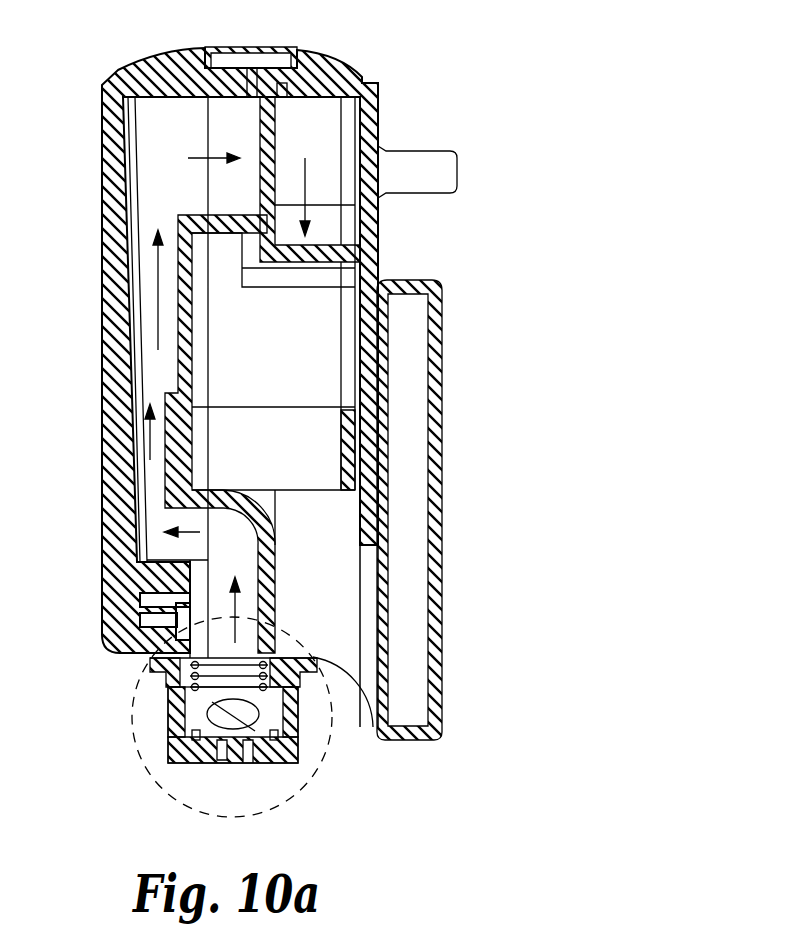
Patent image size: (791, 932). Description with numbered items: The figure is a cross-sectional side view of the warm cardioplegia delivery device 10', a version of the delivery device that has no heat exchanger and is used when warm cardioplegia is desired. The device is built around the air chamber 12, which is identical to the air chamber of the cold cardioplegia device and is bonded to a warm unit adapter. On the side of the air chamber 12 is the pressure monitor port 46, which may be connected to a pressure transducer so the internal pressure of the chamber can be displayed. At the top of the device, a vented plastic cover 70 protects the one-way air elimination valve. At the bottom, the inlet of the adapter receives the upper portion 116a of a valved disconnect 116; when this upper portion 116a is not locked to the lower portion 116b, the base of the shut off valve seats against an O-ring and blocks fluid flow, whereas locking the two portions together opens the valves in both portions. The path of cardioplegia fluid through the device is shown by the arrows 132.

The warm cardioplegia delivery device 10' is at (247, 412).
The air chamber 12 is at (102, 470).
The arrows 132 is at (147, 307).
The vented plastic cover 70 is at (283, 48).
The pressure monitor port 46 is at (432, 163).
The valved disconnect 116 is at (160, 716).
The upper portion 116a is at (147, 667).
The lower portion 116b is at (177, 727).